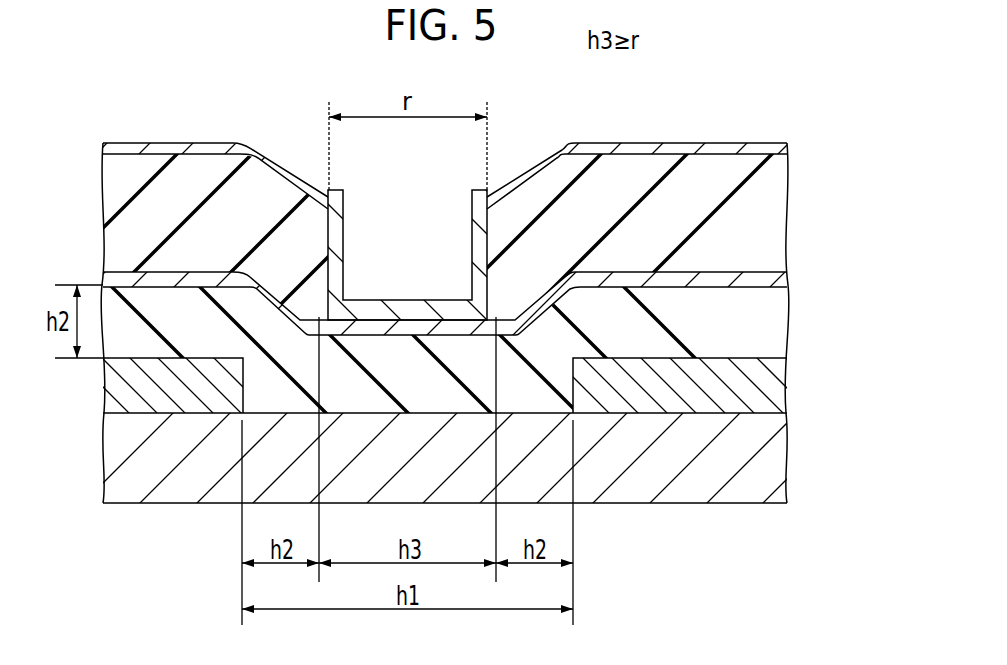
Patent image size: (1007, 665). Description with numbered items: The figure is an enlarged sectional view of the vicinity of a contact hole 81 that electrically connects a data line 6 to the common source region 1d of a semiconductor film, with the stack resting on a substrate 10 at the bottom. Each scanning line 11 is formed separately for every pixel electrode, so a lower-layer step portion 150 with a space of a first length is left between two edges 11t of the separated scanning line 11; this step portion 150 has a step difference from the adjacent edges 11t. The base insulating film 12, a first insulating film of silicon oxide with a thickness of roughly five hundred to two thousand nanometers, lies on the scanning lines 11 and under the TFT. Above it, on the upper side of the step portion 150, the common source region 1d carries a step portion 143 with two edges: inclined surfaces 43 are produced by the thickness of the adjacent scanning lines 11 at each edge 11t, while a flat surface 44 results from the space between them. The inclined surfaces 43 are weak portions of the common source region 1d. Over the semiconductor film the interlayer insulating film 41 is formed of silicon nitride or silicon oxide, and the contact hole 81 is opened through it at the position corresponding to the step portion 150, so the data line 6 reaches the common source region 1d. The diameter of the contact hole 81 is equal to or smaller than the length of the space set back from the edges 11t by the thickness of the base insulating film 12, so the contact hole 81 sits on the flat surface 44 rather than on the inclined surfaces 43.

The data line 6 is at (787, 146).
The interlayer insulating film 41 is at (782, 196).
The common source region 1d is at (780, 279).
The base insulating film 12 is at (778, 318).
The scanning line 11 is at (778, 378).
The substrate 10 is at (780, 446).
The inclined surface 43 is at (272, 283).
The step portion 143 is at (503, 288).
The lower-layer step portion 150 is at (516, 390).
The contact hole 81 is at (484, 284).
The flat surface 44 is at (398, 340).
The edge of scanning line 11t is at (248, 388).